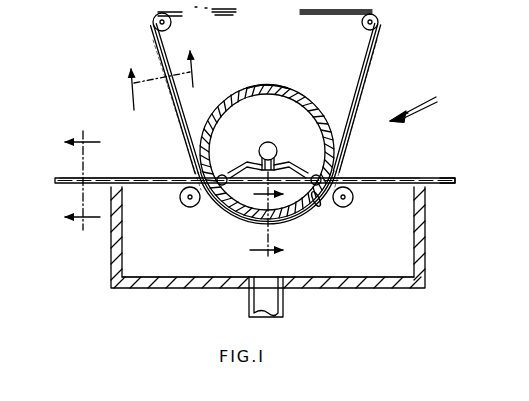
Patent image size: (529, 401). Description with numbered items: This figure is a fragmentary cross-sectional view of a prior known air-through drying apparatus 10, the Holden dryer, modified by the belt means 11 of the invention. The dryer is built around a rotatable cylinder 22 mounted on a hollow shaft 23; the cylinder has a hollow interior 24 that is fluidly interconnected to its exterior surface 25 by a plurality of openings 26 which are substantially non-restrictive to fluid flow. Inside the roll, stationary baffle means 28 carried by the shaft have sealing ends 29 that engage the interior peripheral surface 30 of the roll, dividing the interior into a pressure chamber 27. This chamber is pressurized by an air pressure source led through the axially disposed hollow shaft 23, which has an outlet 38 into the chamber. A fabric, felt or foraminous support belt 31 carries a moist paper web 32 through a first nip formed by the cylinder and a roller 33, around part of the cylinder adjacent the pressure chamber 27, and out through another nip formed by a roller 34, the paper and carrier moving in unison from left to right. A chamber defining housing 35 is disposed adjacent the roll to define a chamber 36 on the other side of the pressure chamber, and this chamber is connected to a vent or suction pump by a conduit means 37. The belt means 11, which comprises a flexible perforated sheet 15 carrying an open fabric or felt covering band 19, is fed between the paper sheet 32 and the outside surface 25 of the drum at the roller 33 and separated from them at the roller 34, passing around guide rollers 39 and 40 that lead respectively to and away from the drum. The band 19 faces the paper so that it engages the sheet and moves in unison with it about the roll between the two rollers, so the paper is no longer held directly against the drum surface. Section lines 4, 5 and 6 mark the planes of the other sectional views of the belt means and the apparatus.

The section line 4- 4 is at (164, 80).
The section line 5- 5 is at (82, 180).
The section line 6- 6 is at (266, 223).
The air-through drying apparatus 10 is at (424, 100).
The belt means 11 is at (356, 117).
The flexible perforated sheet 15 is at (368, 47).
The covering band 19 is at (381, 62).
The rotatable cylinder 22 is at (268, 85).
The hollow shaft 23 is at (259, 147).
The hollow interior 24 is at (300, 119).
The exterior surface 25 is at (300, 90).
The openings 26 is at (250, 86).
The pressure chamber 27 is at (321, 205).
The stationary baffle means 28 is at (322, 176).
The sealing ends 29 is at (348, 178).
The interior peripheral surface 30 is at (204, 160).
The support belt 31 is at (443, 186).
The moist paper web 32 is at (433, 178).
The roller 33 is at (182, 204).
The roller 34 is at (355, 198).
The chamber defining housing 35 is at (113, 250).
The chamber 36 is at (380, 260).
The conduit means 37 is at (249, 298).
The outlet 38 is at (271, 142).
The guide roller 39 is at (153, 22).
The guide roller 40 is at (378, 22).